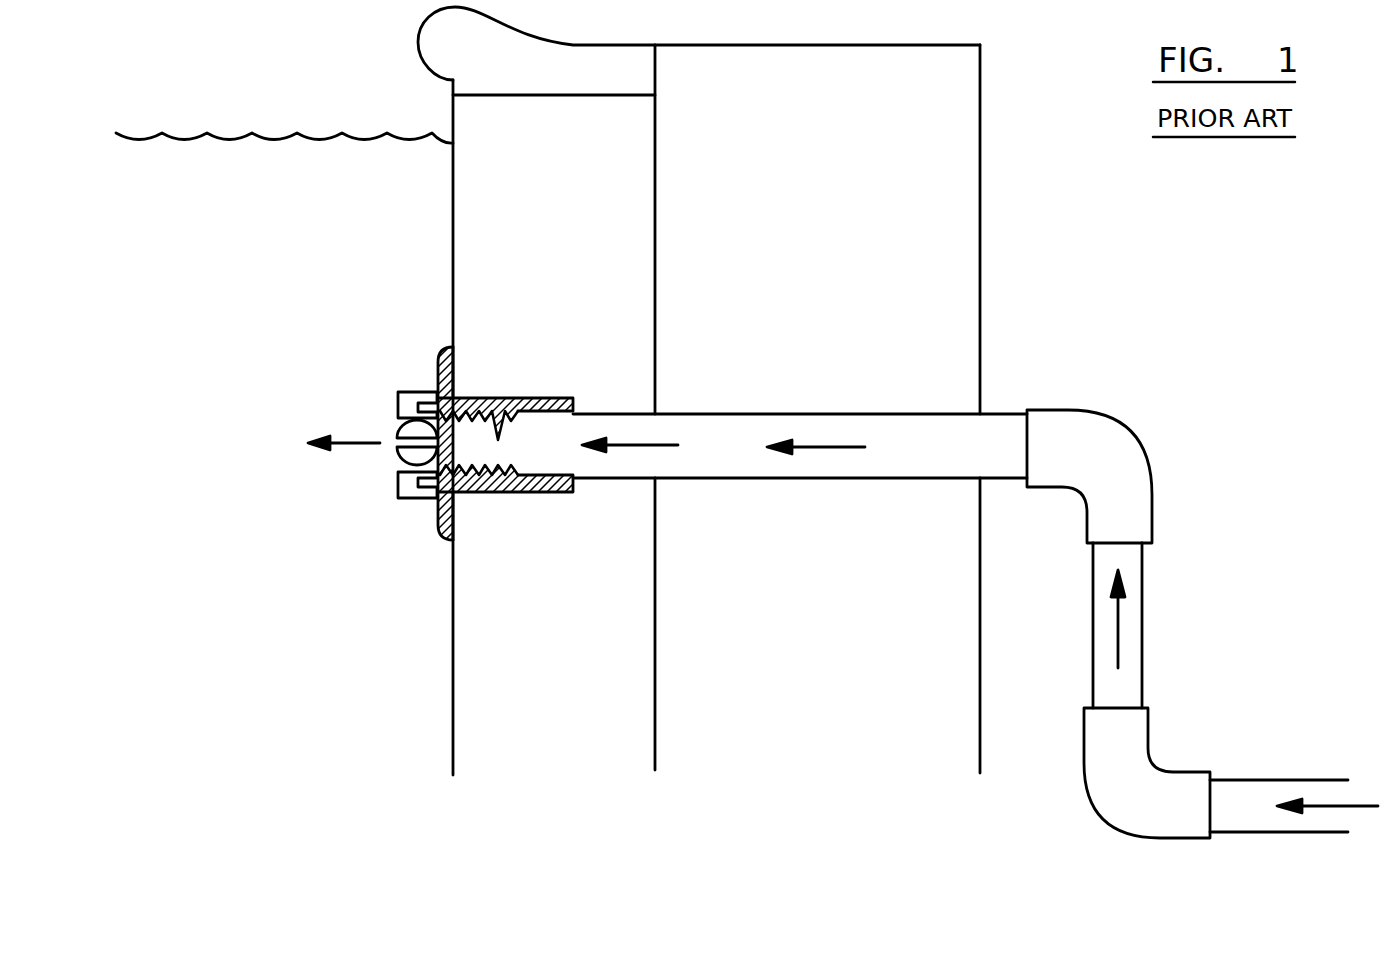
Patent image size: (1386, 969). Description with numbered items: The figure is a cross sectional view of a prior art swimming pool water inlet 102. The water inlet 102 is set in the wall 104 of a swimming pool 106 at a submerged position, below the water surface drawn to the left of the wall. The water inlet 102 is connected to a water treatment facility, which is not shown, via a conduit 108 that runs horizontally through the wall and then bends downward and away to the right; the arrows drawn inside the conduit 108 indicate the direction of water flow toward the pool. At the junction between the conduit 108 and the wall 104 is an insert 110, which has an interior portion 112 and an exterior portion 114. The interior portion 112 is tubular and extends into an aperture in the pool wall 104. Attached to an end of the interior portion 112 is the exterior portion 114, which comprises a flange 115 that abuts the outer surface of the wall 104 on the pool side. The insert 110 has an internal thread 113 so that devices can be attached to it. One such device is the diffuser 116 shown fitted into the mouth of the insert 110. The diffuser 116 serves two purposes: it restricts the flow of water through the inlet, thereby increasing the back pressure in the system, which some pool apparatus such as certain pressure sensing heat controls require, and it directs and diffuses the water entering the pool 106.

The swimming pool water inlet 102 is at (298, 508).
The wall 104 is at (566, 205).
The swimming pool 106 is at (276, 252).
The conduit 108 is at (1142, 618).
The insert 110 is at (470, 404).
The interior portion 112 is at (495, 515).
The internal thread 113 is at (493, 466).
The exterior portion 114 is at (418, 366).
The flange 115 is at (437, 518).
The diffuser 116 is at (405, 434).